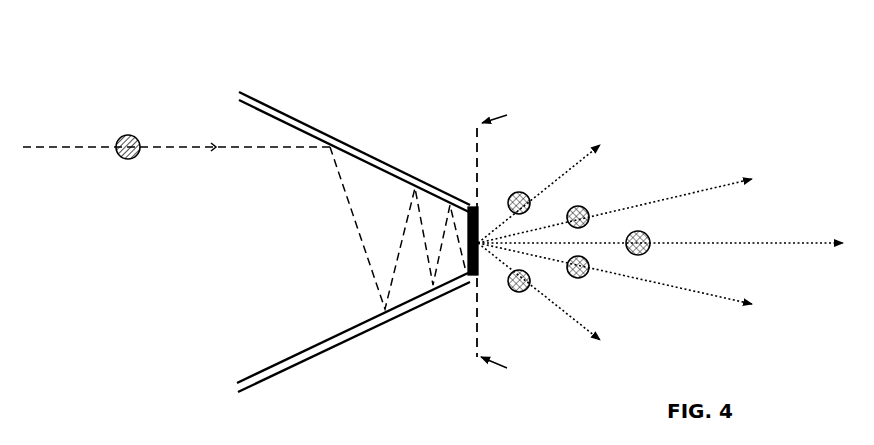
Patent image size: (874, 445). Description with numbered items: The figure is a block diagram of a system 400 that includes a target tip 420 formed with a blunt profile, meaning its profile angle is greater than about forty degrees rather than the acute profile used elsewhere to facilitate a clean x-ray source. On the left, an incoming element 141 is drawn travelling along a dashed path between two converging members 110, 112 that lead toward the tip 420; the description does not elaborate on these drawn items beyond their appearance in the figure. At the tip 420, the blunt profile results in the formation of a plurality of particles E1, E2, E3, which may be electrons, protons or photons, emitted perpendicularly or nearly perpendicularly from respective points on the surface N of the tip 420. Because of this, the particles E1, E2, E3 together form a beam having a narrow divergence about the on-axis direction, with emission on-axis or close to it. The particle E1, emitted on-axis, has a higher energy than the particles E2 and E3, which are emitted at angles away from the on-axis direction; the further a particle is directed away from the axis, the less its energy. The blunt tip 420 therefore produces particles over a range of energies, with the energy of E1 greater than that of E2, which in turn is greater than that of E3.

The system 400 is at (719, 54).
The incident photon 141 is at (244, 197).
The upper reflective plate 110 is at (354, 145).
The lower reflective plate 112 is at (331, 332).
The tip 420 is at (523, 294).
The surface N is at (481, 211).
The particle E1 is at (660, 251).
The particle E2 is at (615, 244).
The particle E3 is at (539, 244).